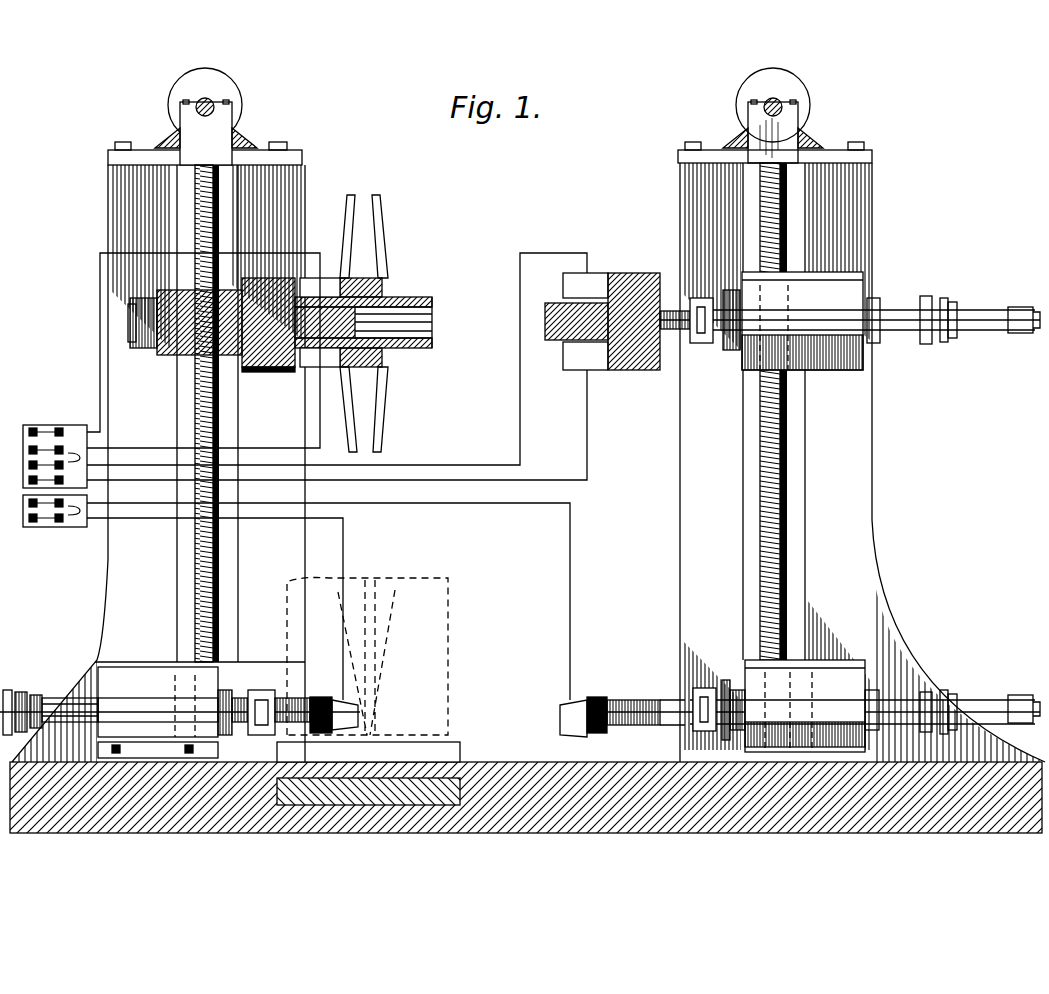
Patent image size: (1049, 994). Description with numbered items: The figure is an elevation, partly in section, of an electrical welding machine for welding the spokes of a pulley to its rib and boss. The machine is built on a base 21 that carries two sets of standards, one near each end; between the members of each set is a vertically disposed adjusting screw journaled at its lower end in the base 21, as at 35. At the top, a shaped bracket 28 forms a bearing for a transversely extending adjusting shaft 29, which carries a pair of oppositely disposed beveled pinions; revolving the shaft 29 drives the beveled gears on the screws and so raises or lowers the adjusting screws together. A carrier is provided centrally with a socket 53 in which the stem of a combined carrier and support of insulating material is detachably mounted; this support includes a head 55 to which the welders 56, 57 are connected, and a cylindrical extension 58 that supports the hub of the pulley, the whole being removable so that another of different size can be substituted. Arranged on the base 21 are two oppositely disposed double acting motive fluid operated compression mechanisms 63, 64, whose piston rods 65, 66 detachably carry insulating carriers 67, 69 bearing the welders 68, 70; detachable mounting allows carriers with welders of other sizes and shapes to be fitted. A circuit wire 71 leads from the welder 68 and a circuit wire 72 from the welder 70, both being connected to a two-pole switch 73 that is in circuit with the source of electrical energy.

The base 21 is at (516, 762).
The bracket 28 is at (790, 140).
The adjusting shaft 29 is at (780, 102).
The journal of the adjusting screws in the base 35 is at (865, 712).
The socket 53 is at (175, 356).
The head 55 is at (262, 375).
The welder 56 is at (342, 290).
The welder 57 is at (329, 375).
The cylindrical extension 58 is at (325, 310).
The double acting motive fluid operated compression mechanism 63 is at (805, 706).
The double acting motive fluid operated compression mechanism 64 is at (158, 712).
The piston rod 65 is at (650, 700).
The piston rod 66 is at (275, 690).
The carrier 67 is at (603, 700).
The welder 68 is at (575, 700).
The carrier 69 is at (322, 697).
The welder 70 is at (350, 718).
The circuit wire 71 is at (570, 535).
The circuit wire 72 is at (343, 536).
The two-pole switch 73 is at (52, 527).